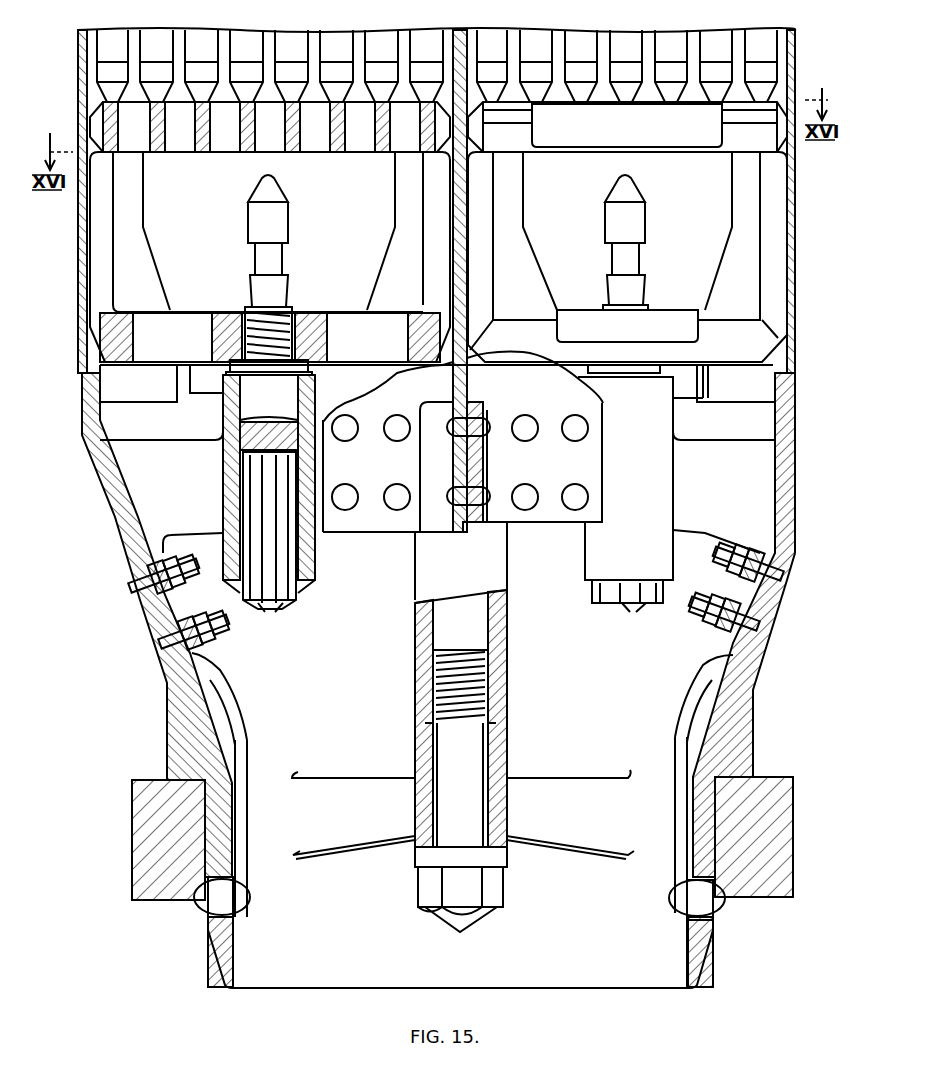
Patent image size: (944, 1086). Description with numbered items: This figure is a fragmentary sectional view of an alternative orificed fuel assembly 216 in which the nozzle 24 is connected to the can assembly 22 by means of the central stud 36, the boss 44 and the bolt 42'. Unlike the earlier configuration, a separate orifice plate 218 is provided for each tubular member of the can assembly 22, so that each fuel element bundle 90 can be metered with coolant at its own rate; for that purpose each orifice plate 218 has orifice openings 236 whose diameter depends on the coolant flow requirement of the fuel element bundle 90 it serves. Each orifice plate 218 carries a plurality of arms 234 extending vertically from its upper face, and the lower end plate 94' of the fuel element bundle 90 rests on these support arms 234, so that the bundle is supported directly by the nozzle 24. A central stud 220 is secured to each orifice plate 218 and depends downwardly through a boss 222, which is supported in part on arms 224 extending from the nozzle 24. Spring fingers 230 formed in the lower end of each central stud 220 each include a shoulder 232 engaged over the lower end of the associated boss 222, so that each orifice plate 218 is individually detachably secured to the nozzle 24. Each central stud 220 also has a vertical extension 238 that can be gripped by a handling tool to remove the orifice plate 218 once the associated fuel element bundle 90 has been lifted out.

The can assembly 22 is at (80, 40).
The orificed fuel assembly 216 is at (334, 19).
The fuel element bundle 90 is at (474, 30).
The lower end plate 94' is at (438, 132).
The support arms 234 is at (132, 186).
The vertical extension 238 is at (278, 220).
The orifice openings 236 is at (193, 328).
The orifice plate 218 is at (123, 354).
The central stud 220 is at (247, 405).
The boss 222 is at (653, 485).
The arms 224 is at (153, 520).
The shoulder 232 is at (310, 570).
The spring fingers 230 is at (447, 615).
The central stud 36 is at (497, 623).
The boss 44 is at (508, 777).
The bolt 42' is at (484, 899).
The nozzle 24 is at (757, 718).